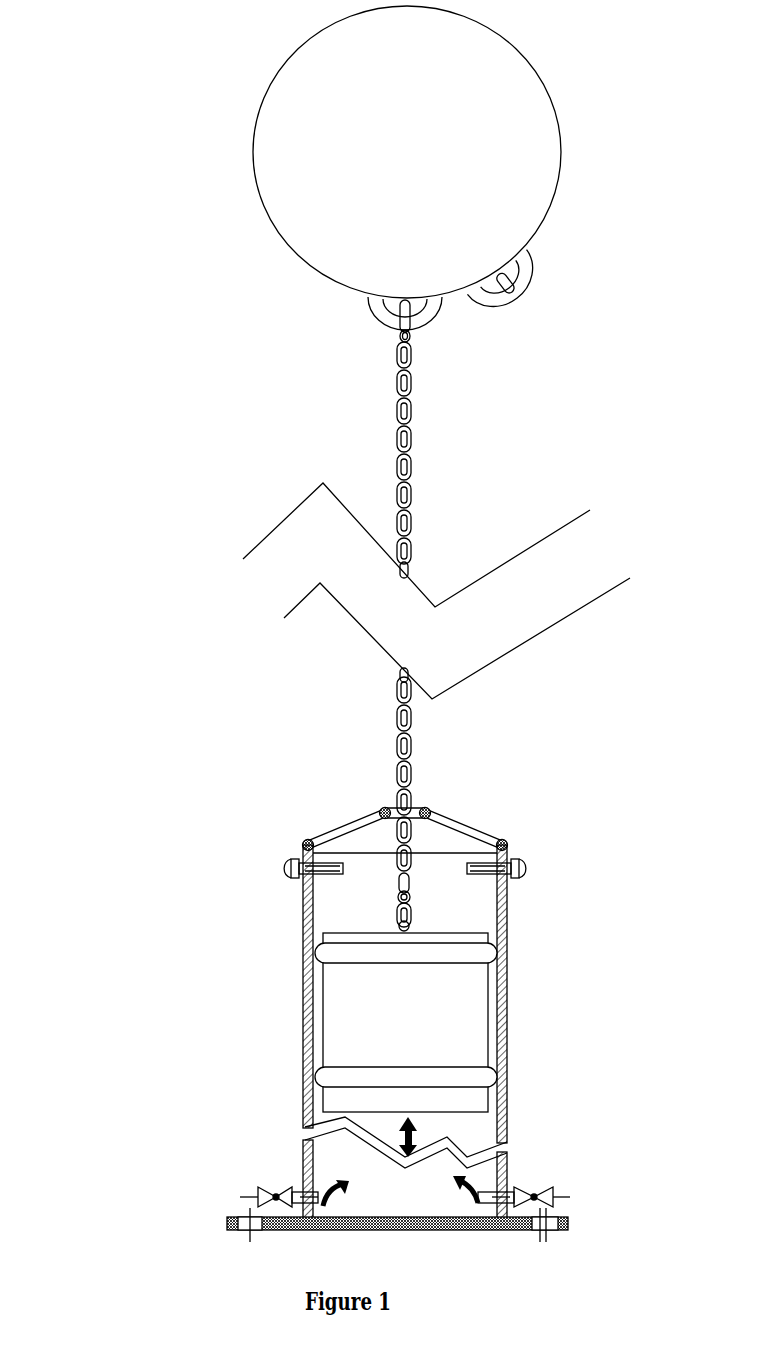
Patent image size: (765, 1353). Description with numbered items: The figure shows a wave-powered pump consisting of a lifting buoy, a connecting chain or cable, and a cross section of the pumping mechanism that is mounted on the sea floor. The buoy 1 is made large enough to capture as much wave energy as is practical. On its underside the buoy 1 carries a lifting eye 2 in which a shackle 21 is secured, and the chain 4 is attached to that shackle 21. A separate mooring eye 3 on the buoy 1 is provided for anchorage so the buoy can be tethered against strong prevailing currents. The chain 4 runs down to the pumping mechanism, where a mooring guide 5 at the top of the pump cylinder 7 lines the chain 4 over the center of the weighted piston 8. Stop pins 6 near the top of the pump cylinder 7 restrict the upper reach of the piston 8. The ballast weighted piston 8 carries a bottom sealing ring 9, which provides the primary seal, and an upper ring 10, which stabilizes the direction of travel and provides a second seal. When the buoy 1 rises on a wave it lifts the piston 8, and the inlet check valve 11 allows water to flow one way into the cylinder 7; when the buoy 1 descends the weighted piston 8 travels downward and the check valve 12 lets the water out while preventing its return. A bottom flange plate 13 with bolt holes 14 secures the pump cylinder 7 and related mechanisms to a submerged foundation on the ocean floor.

The buoy 1 is at (252, 120).
The lifting eye 2 is at (366, 314).
The mooring eye 3 is at (528, 293).
The shackle 21 is at (410, 338).
The chain 4 is at (397, 431).
The mooring guide 5 is at (333, 805).
The stop pins 6 is at (280, 866).
The pump cylinder 7 is at (301, 937).
The weighted piston 8 is at (322, 1027).
The sealing ring 9 is at (316, 1080).
The upper ring 10 is at (490, 952).
The inlet check valve 11 is at (260, 1192).
The check valve 12 is at (556, 1196).
The bottom flange plate 13 is at (238, 1227).
The bolt holes 14 is at (548, 1230).